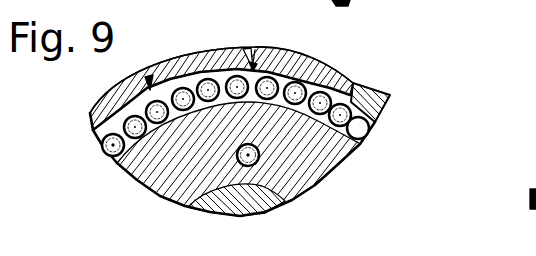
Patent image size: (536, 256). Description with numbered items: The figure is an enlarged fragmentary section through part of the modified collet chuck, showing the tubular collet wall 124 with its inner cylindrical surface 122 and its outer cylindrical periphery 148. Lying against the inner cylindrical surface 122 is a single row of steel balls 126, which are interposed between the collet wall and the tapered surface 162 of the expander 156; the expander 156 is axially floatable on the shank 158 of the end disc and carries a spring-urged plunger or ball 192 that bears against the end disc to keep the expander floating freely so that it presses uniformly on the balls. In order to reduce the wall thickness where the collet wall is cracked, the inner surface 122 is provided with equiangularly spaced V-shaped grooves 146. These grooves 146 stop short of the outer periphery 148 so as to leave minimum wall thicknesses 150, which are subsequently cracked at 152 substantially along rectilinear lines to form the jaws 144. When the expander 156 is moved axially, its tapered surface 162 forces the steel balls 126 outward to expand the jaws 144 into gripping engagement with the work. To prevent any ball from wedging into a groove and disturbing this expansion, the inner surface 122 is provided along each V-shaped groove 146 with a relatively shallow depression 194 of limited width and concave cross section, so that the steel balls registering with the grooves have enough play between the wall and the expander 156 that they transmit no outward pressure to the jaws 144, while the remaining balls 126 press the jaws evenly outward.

The inner cylindrical surface 122 is at (198, 63).
The tubular collet wall 124 is at (379, 95).
The steel balls 126 is at (302, 60).
The jaws 144 is at (236, 50).
The V-shaped grooves 146 is at (266, 56).
The outer cylindrical periphery 148 is at (188, 56).
The minimum wall thicknesses 150 is at (243, 54).
The cracks 152 is at (256, 52).
The expander 156 is at (318, 158).
The shank 158 is at (277, 203).
The tapered surface 162 is at (128, 152).
The spring-urged plunger or ball 192 is at (260, 160).
The shallow depressions 194 is at (282, 76).